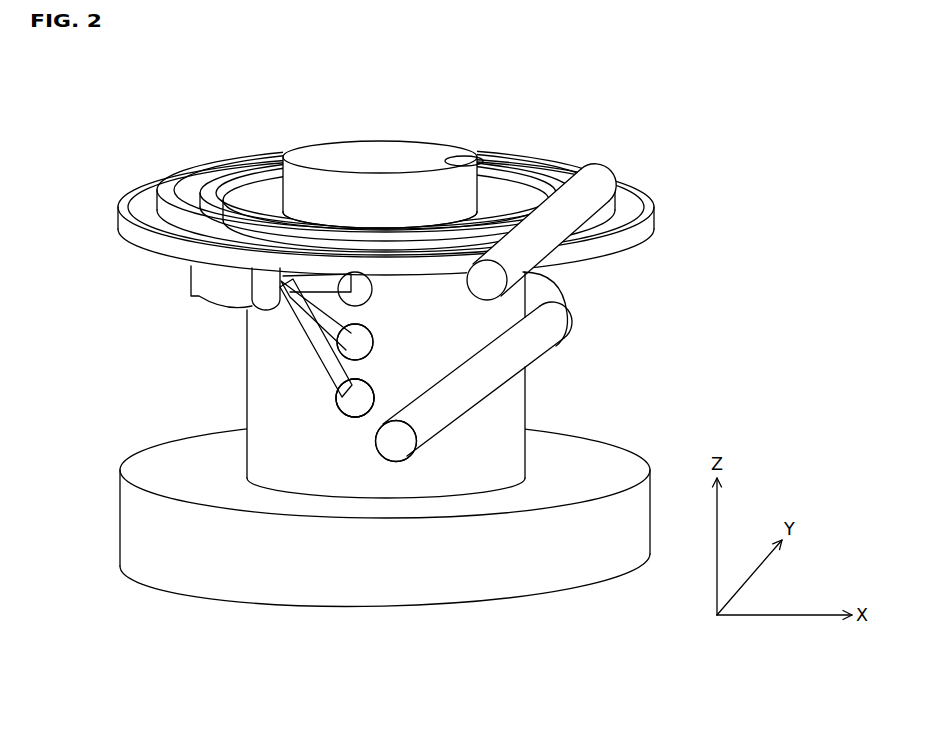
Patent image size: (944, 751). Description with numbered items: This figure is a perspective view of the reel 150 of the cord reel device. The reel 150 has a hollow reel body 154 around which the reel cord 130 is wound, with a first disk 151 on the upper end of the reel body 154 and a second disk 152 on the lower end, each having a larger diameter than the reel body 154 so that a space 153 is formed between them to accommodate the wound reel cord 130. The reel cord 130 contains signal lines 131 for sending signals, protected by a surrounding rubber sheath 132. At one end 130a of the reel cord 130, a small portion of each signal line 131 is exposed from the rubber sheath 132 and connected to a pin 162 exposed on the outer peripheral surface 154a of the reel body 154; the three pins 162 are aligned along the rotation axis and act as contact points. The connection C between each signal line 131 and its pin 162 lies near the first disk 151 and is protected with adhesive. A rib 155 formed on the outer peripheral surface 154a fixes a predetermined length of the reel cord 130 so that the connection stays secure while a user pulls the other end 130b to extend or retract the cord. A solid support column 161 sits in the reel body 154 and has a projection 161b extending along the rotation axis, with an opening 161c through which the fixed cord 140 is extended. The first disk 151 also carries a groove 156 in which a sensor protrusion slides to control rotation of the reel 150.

The reel cord 130 is at (375, 468).
The one end of the reel cord 130a is at (335, 395).
The another end of the reel cord 130b is at (428, 432).
The signal line 131 is at (300, 293).
The rubber sheath 132 is at (230, 273).
The fixed cord 140 is at (540, 237).
The reel 150 is at (361, 161).
The first disk 151 is at (240, 168).
The second disk 152 is at (615, 457).
The space 153 is at (563, 330).
The reel body 154 is at (307, 393).
The outer peripheral surface 154a is at (447, 364).
The rib 155 is at (190, 272).
The groove 156 is at (217, 205).
The support column 161 is at (338, 132).
The projection 161b is at (322, 165).
The opening 161c is at (483, 157).
The pin 162 is at (360, 290).
The connection C is at (357, 425).